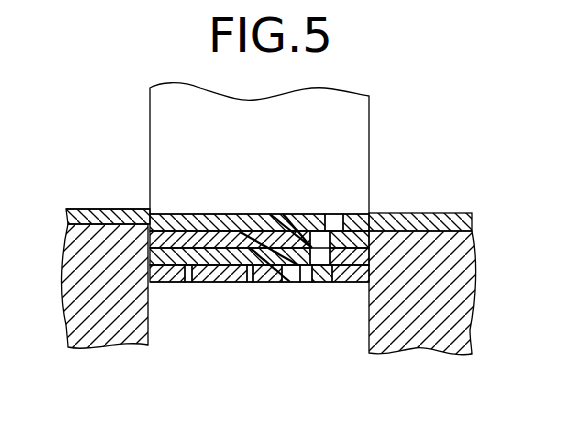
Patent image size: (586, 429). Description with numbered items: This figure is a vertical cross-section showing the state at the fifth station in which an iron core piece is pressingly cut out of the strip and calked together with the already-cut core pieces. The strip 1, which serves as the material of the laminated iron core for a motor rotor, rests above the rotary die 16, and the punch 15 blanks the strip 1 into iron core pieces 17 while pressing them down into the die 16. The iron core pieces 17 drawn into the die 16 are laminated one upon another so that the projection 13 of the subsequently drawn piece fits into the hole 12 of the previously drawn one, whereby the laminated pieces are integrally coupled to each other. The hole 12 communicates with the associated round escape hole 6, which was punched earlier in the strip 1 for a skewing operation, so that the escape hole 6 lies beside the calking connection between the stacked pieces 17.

The strip 1 is at (112, 212).
The punch 15 is at (267, 163).
The projection 13 is at (312, 232).
The round escape hole 6 is at (340, 226).
The hole 12 is at (287, 265).
The iron core piece 17 is at (187, 265).
The rotary die 16 is at (412, 338).